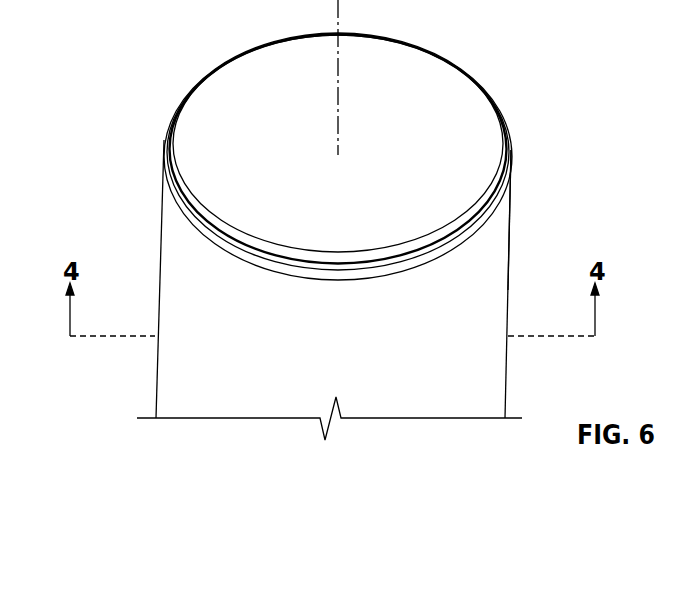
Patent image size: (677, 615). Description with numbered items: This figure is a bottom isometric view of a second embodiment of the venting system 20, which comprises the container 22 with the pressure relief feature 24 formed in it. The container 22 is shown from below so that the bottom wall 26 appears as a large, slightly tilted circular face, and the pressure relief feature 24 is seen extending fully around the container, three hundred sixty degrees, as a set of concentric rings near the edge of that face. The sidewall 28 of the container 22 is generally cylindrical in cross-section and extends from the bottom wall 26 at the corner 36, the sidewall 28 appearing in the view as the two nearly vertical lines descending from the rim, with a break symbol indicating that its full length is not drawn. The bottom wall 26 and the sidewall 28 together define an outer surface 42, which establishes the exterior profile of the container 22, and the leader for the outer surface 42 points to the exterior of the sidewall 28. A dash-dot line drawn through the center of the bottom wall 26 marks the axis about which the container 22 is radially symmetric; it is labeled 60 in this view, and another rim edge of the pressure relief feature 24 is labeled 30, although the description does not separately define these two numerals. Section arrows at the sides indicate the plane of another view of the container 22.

The venting system 20 is at (349, 220).
The container 22 is at (539, 284).
The pressure relief feature 24 is at (350, 140).
The bottom wall 26 is at (264, 72).
The sidewall 28 is at (170, 308).
The rim edge 30 is at (168, 195).
The corner 36 is at (168, 133).
The outer surface 42 is at (502, 250).
The central axis 60 is at (339, 6).